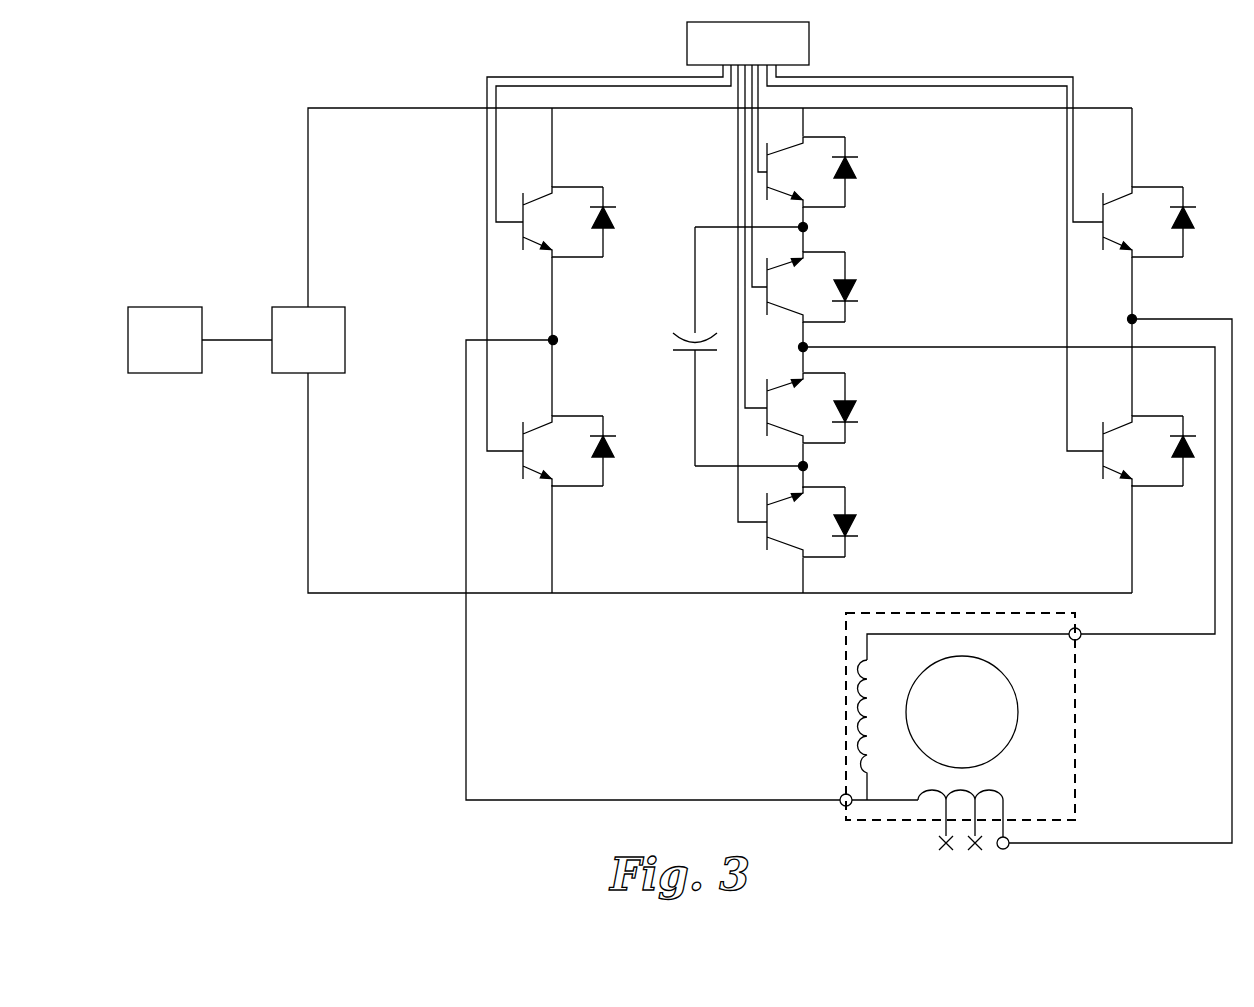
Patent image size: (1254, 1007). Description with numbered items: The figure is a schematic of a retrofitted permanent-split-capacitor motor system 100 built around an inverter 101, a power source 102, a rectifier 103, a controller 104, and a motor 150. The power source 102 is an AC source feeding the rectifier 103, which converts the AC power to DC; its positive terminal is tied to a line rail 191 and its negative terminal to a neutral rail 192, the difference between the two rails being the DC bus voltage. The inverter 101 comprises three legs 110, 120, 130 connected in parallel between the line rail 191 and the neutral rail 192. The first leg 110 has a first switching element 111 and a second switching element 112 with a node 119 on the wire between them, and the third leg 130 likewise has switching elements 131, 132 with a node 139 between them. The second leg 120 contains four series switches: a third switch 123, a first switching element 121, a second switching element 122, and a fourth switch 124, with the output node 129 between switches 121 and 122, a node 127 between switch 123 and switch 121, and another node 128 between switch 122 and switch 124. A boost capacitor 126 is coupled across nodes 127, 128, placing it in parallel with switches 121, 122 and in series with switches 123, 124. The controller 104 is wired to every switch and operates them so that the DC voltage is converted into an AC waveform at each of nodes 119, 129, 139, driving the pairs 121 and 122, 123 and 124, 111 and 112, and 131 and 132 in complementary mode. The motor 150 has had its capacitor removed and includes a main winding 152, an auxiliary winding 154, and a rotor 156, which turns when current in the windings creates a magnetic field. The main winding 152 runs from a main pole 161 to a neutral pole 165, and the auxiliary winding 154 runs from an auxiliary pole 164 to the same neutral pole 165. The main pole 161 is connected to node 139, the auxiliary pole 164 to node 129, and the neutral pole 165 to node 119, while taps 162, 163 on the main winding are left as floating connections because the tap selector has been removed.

The system 100 is at (167, 118).
The inverter 101 is at (638, 630).
The power source 102 is at (165, 340).
The rectifier 103 is at (273, 342).
The controller 104 is at (795, 272).
The first leg 110 is at (568, 104).
The first switching element 111 is at (617, 222).
The second switching element 112 is at (617, 452).
The node 119 is at (562, 339).
The second leg 120 is at (818, 104).
The first switching element 121 is at (886, 294).
The second switching element 122 is at (890, 411).
The third switch 123 is at (890, 186).
The fourth switch 124 is at (886, 521).
The boost capacitor 126 is at (663, 342).
The node 127 is at (812, 228).
The node 128 is at (815, 468).
The node 129 is at (812, 350).
The third leg 130 is at (1118, 104).
The first switching element 131 is at (1050, 221).
The second switching element 132 is at (1050, 451).
The node 139 is at (1145, 313).
The motor 150 is at (1078, 730).
The main winding 152 is at (984, 790).
The auxiliary winding 154 is at (858, 710).
The rotor 156 is at (962, 712).
The main pole 161 is at (1010, 856).
The tap 162 is at (975, 855).
The tap 163 is at (946, 855).
The auxiliary pole 164 is at (1083, 640).
The neutral pole 165 is at (838, 796).
The line rail 191 is at (358, 108).
The neutral rail 192 is at (378, 592).